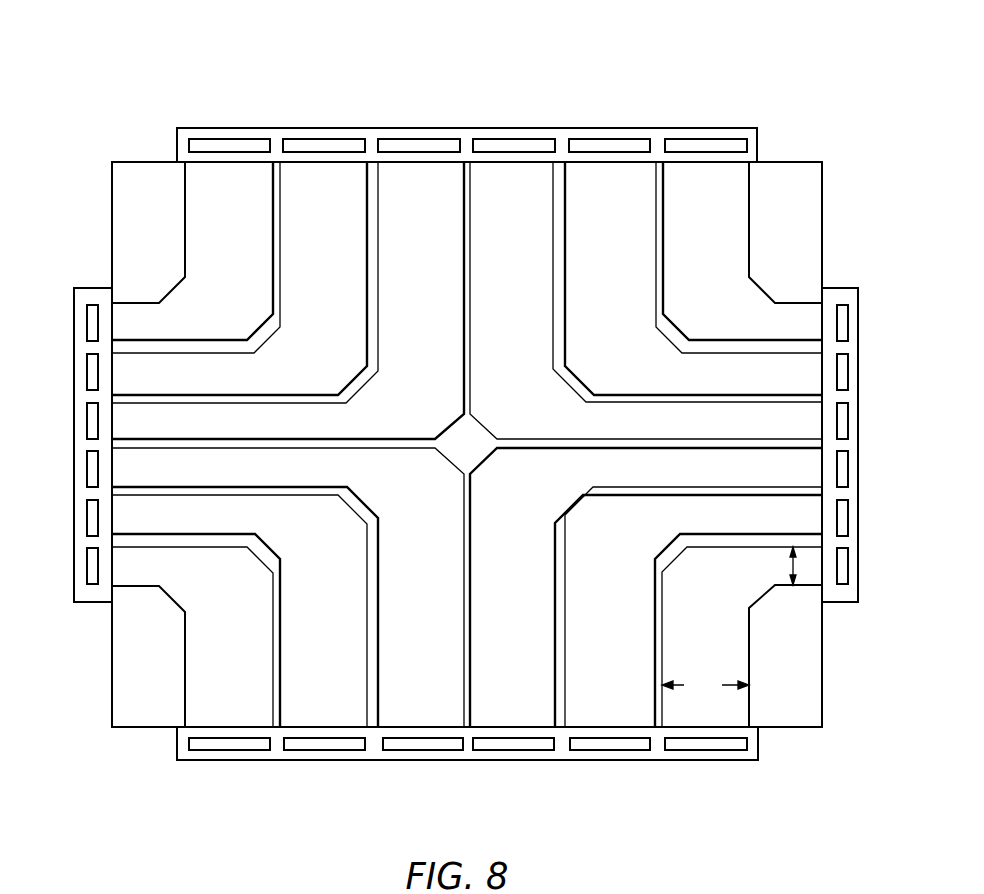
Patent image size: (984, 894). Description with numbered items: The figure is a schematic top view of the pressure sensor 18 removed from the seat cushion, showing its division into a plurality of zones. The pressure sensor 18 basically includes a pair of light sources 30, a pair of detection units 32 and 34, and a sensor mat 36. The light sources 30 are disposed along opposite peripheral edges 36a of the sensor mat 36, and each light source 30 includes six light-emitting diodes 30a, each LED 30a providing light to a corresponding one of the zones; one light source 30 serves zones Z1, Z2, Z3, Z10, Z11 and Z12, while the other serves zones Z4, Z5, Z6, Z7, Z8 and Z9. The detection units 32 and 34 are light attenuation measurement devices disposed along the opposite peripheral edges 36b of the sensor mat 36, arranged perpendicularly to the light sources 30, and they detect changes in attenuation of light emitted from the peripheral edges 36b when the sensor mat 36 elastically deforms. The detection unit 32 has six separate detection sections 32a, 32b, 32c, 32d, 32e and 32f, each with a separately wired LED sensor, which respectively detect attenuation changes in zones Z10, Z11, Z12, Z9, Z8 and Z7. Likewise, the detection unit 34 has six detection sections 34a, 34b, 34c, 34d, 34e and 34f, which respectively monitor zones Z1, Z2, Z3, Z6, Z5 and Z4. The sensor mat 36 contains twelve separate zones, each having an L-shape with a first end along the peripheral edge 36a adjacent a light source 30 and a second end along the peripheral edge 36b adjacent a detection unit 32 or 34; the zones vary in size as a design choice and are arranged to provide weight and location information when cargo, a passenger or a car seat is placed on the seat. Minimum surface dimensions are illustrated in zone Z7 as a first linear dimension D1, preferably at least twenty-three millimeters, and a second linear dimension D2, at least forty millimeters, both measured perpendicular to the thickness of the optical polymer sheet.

The pressure sensor 18 is at (597, 63).
The light source 30 is at (82, 292).
The light-emitting diode 30a is at (90, 314).
The detection unit 32 is at (758, 752).
The detection section 32a is at (230, 745).
The detection section 32b is at (326, 745).
The detection section 32c is at (423, 745).
The detection section 32d is at (513, 745).
The detection section 32e is at (612, 745).
The detection section 32f is at (708, 745).
The detection unit 34 is at (198, 132).
The detection section 34a is at (232, 145).
The detection section 34b is at (332, 145).
The detection section 34c is at (428, 145).
The detection section 34d is at (518, 145).
The detection section 34e is at (612, 145).
The detection section 34f is at (728, 146).
The sensor mat 36 is at (141, 172).
The peripheral edge 36a is at (112, 431).
The peripheral edge 36b is at (684, 165).
The first linear dimension D1 is at (790, 566).
The second linear dimension D2 is at (705, 686).
The zone Z1 is at (196, 257).
The zone Z2 is at (245, 282).
The zone Z3 is at (420, 412).
The zone Z4 is at (700, 320).
The zone Z5 is at (687, 282).
The zone Z6 is at (515, 412).
The zone Z7 is at (738, 630).
The zone Z8 is at (613, 547).
The zone Z9 is at (510, 492).
The zone Z10 is at (196, 630).
The zone Z11 is at (245, 607).
The zone Z12 is at (429, 488).